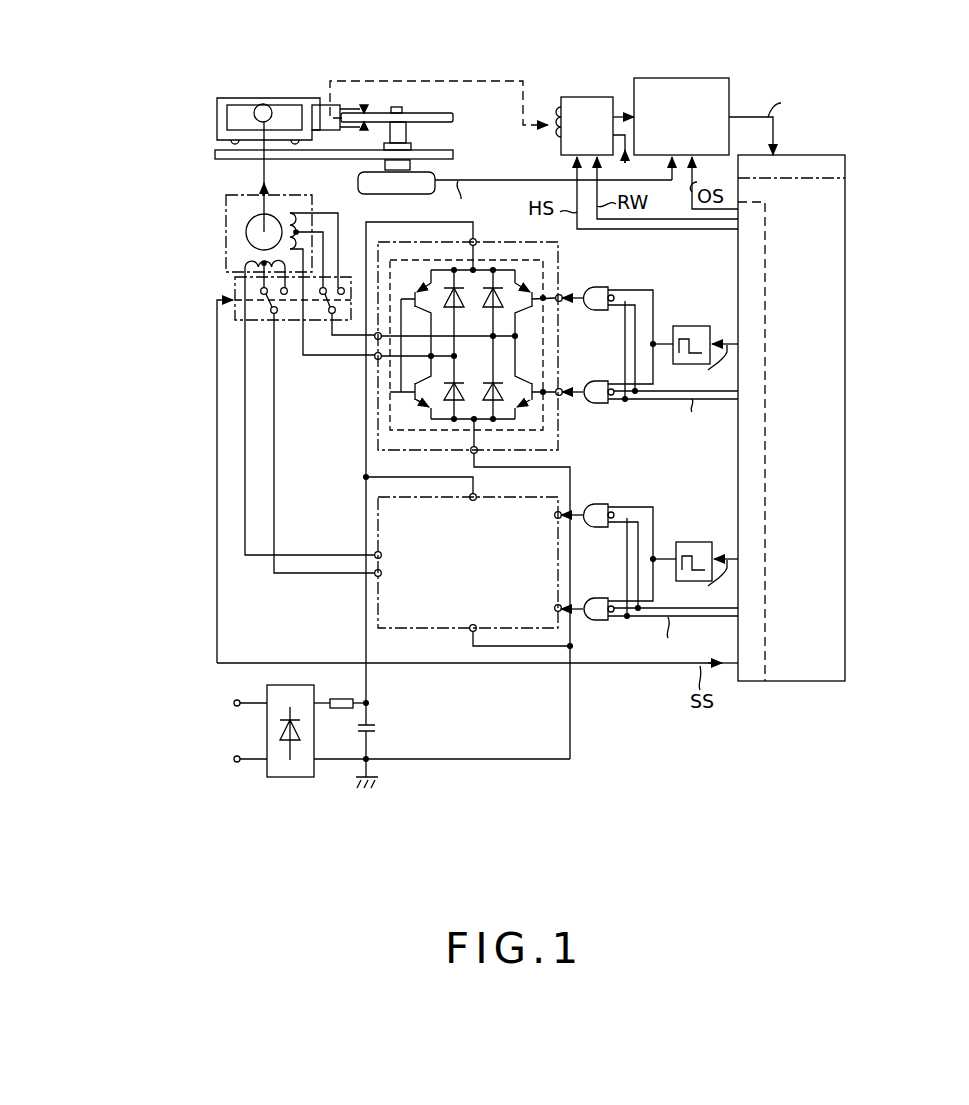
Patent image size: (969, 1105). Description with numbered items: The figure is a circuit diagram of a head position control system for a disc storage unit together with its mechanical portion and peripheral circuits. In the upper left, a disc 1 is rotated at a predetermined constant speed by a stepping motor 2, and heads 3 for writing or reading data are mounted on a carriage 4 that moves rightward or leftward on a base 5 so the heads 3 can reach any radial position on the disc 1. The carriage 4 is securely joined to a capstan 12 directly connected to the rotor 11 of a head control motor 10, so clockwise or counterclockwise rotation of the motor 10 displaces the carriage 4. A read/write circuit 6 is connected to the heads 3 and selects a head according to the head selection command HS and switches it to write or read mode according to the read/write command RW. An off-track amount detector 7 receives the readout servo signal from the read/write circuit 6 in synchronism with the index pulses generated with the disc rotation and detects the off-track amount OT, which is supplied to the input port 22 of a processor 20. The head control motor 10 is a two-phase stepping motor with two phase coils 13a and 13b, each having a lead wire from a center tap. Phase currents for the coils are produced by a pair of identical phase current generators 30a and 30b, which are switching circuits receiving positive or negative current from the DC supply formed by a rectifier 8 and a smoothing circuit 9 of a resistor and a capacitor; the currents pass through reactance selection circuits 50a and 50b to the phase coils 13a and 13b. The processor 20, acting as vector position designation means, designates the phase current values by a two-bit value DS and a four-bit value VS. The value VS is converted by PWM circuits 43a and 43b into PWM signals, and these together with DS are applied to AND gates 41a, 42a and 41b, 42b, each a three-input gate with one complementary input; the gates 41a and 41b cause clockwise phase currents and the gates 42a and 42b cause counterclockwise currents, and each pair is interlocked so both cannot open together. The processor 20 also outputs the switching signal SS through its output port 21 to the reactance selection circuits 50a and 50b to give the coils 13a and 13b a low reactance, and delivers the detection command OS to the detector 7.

The disc 1 is at (430, 113).
The stepping motor 2 is at (435, 170).
The heads 3 is at (363, 106).
The carriage 4 is at (313, 98).
The base 5 is at (215, 154).
The read/write circuit 6 is at (592, 97).
The off-track amount detector 7 is at (690, 78).
The rectifier 8 is at (287, 778).
The smoothing circuit 9 is at (377, 715).
The head control motor 10 is at (266, 368).
The rotor 11 is at (246, 241).
The capstan 12 is at (263, 104).
The phase coil 13a is at (288, 250).
The phase coil 13b is at (245, 268).
The processor 20 is at (780, 681).
The output port 21 is at (766, 470).
The input port 22 is at (795, 180).
The phase current generator 30a is at (378, 410).
The phase current generator 30b is at (378, 519).
The AND gate 41a is at (595, 287).
The AND gate 41b is at (595, 504).
The AND gate 42a is at (595, 405).
The AND gate 42b is at (595, 621).
The PWM circuit 43a is at (692, 326).
The PWM circuit 43b is at (694, 542).
The reactance selection circuit 50a is at (325, 323).
The reactance selection circuit 50b is at (257, 322).